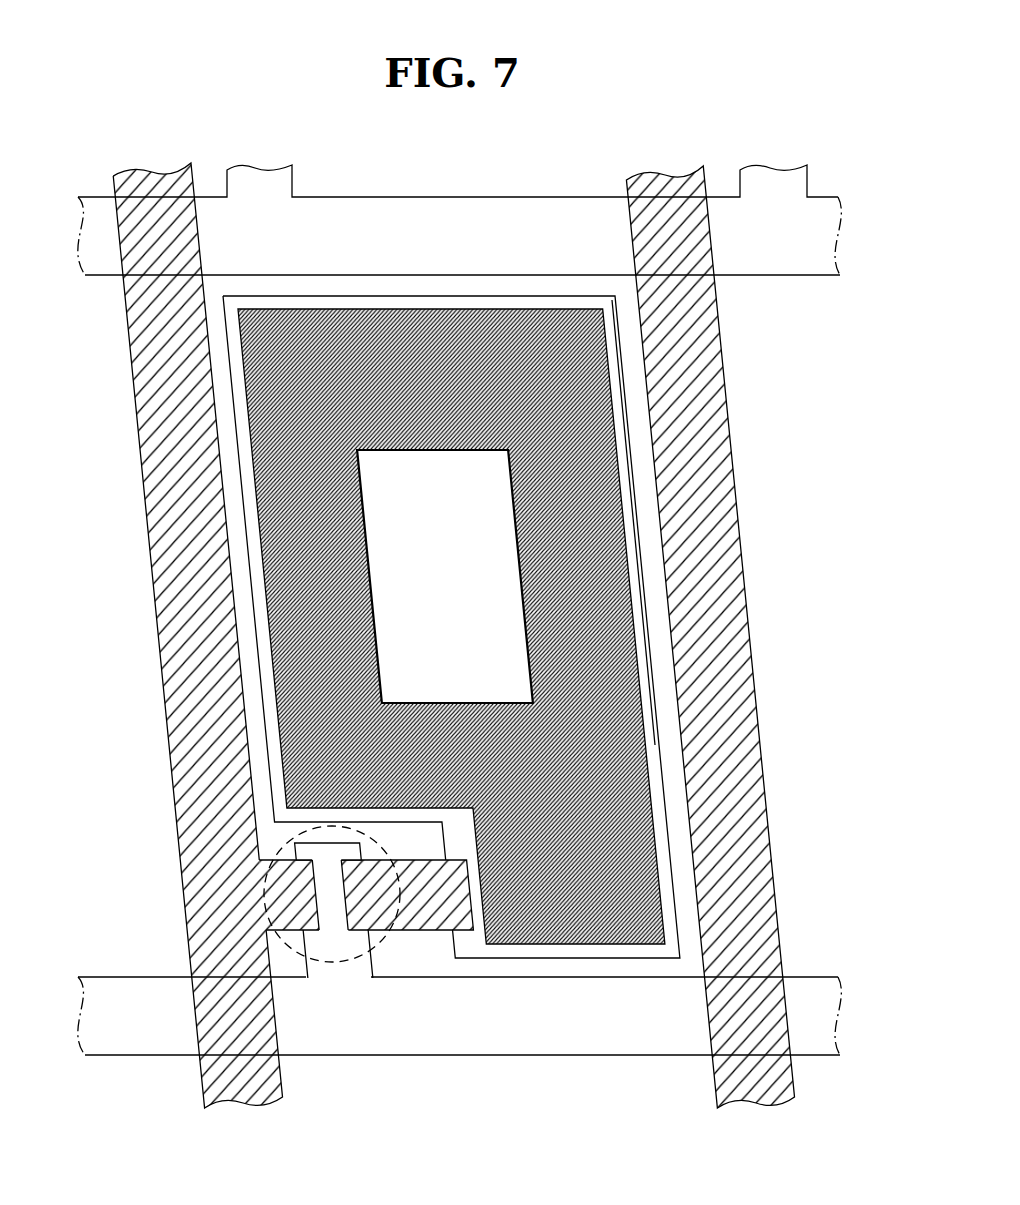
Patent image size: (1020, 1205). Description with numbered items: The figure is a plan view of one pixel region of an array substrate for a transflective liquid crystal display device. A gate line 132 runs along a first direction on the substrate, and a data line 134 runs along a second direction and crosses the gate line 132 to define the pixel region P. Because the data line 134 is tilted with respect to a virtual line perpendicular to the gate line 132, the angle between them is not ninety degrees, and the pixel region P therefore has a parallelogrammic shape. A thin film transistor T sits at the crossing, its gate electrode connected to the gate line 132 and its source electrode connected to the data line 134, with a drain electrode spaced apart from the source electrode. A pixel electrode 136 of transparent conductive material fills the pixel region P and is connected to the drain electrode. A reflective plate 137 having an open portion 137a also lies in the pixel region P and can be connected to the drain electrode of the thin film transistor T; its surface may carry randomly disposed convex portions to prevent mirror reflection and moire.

The gate line 132 is at (546, 1050).
The data line 134 is at (177, 577).
The pixel electrode 136 is at (633, 479).
The reflective plate 137 is at (638, 663).
The open portion 137a is at (498, 571).
The pixel region P is at (664, 755).
The thin film transistor T is at (333, 966).